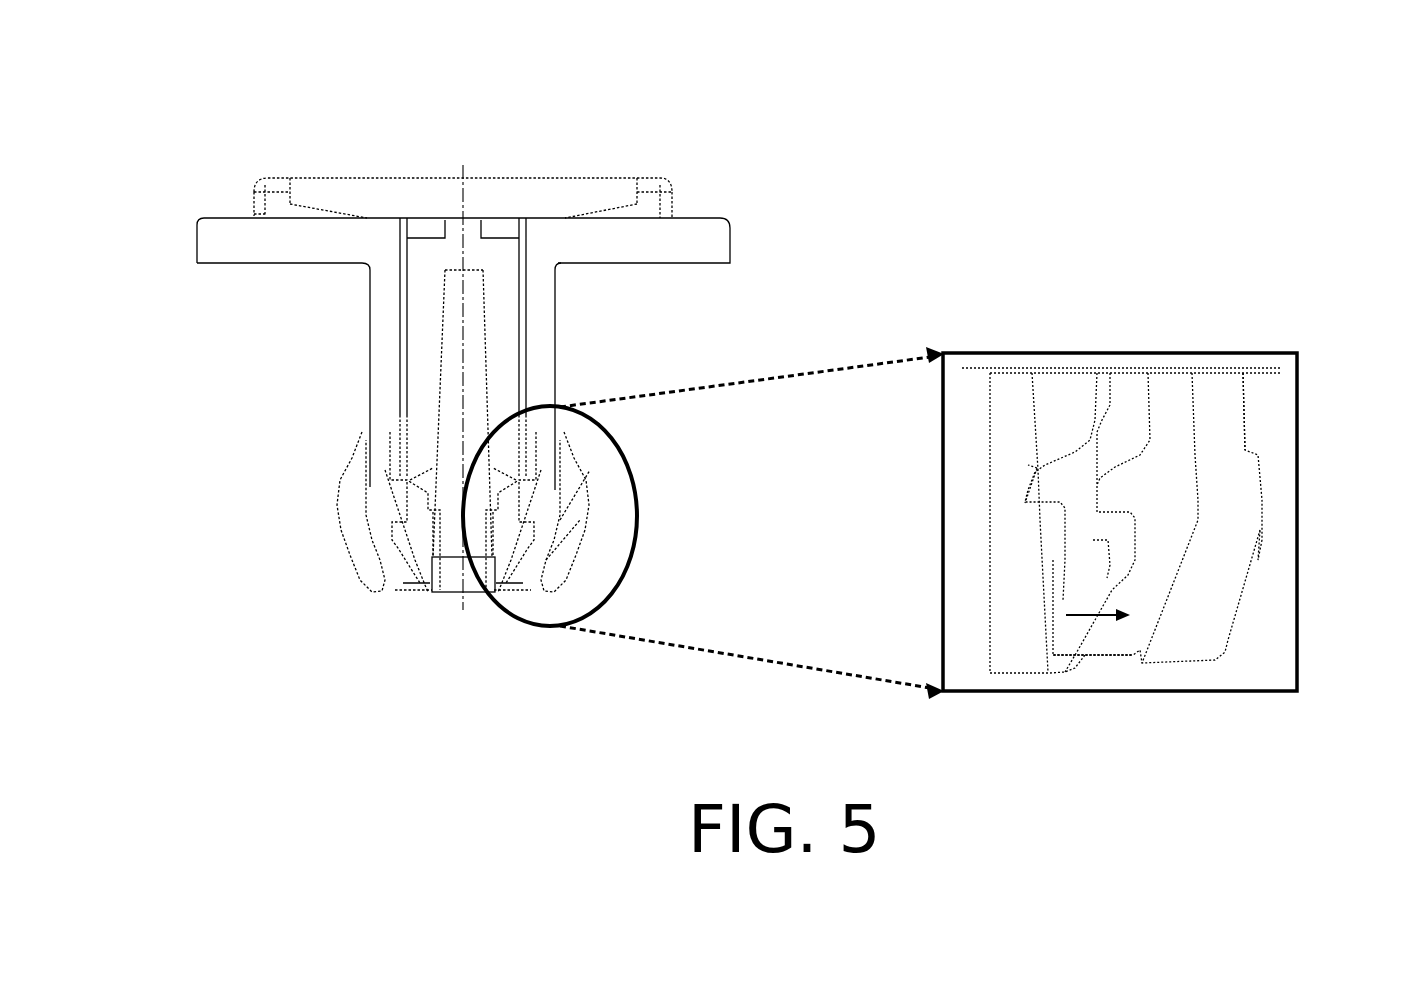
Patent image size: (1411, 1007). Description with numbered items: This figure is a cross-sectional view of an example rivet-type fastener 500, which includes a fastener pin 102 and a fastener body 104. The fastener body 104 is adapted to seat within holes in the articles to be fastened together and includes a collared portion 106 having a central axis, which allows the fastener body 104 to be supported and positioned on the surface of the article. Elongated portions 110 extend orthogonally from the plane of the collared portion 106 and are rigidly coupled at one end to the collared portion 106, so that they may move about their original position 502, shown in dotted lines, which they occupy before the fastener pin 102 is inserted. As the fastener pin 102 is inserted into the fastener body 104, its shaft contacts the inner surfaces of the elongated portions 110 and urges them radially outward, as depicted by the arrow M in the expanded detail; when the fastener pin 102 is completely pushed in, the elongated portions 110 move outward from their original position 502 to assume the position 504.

The fastener 500 is at (732, 387).
The fastener pin 102 is at (325, 177).
The fastener body 104 is at (350, 289).
The collared portion 106 is at (697, 218).
The elongated portions 110 is at (363, 367).
The original position 502 is at (1098, 655).
The position 504 is at (1248, 427).